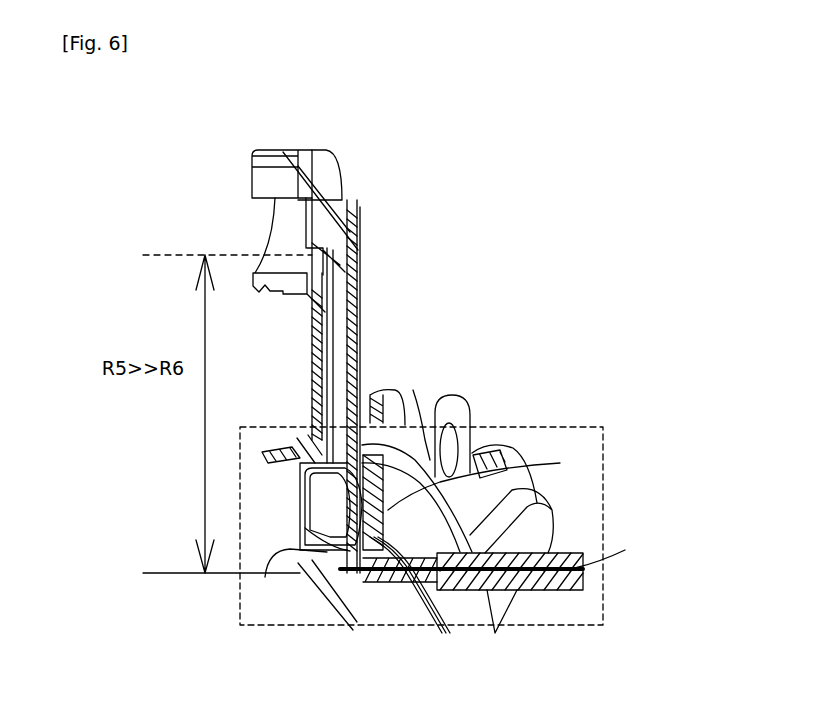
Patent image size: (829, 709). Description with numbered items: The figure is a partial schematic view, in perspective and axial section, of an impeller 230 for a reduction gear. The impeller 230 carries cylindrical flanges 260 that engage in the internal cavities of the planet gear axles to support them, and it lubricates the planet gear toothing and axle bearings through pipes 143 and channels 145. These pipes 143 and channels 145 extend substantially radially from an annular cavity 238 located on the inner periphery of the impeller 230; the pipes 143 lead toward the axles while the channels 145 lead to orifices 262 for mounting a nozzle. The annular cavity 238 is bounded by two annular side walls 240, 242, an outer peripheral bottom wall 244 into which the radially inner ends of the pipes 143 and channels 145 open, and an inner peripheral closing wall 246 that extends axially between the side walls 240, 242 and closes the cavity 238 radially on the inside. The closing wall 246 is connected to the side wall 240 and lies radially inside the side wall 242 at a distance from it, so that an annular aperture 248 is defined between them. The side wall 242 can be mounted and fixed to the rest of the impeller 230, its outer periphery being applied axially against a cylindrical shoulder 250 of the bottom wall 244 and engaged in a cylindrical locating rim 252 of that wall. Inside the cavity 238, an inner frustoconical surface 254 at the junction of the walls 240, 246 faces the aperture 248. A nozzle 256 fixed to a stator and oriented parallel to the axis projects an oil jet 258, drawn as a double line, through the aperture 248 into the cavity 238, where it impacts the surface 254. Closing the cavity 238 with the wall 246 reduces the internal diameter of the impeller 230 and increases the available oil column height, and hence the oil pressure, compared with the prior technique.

The impeller 230 is at (583, 242).
The cylindrical flanges 260 is at (294, 160).
The pipes 143 is at (352, 333).
The channels 145 is at (500, 430).
The outer peripheral bottom wall 244 is at (310, 437).
The annular side wall 240 is at (307, 488).
The annular cavity 238 is at (322, 512).
The cylindrical shoulder 250 is at (378, 405).
The cylindrical locating rim 252 is at (412, 425).
The orifices 262 is at (470, 417).
The annular side wall 242 is at (560, 463).
The nozzle 256 is at (583, 565).
The inner frustoconical surface 254 is at (265, 580).
The inner peripheral closing wall 246 is at (340, 598).
The oil jet 258 is at (420, 608).
The annular aperture 248 is at (395, 578).